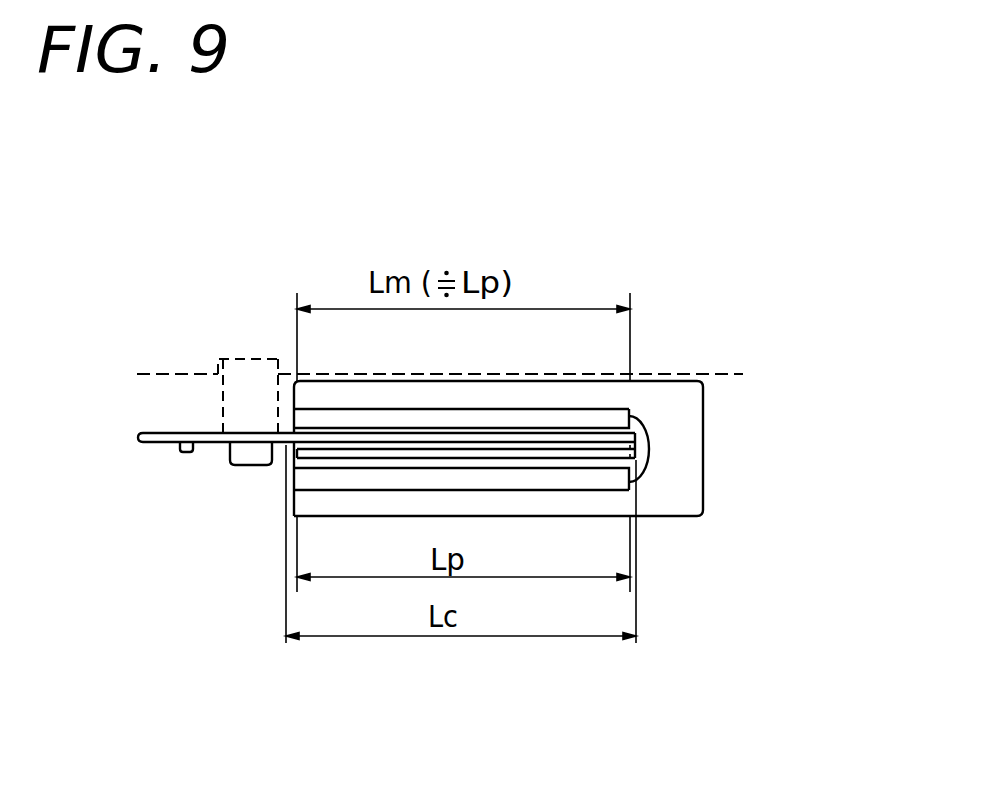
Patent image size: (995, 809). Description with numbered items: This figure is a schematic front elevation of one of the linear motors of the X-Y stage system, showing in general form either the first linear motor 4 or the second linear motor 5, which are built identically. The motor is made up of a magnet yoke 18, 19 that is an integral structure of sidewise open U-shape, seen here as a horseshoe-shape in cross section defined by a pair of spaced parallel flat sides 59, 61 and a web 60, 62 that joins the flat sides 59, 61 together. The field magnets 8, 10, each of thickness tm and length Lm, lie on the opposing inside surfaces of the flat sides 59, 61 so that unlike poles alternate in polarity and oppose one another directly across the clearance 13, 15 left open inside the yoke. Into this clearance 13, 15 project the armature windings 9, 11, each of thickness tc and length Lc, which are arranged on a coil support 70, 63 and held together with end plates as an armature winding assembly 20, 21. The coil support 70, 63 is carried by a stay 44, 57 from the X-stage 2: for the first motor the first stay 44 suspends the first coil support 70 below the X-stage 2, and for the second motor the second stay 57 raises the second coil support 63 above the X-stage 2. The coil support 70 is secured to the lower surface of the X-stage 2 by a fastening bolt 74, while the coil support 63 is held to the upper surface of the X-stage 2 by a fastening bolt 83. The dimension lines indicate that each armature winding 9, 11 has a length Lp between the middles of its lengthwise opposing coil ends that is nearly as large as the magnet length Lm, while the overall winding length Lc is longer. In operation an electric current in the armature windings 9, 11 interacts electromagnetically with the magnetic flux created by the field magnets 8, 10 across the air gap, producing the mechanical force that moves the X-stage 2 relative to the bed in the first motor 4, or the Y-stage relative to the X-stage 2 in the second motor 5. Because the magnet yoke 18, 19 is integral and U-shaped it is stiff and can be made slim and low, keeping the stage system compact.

The X-stage 2 is at (663, 370).
The first linear motor 4 is at (481, 451).
The second linear motor 5 is at (698, 377).
The first field magnets 8 is at (483, 487).
The second field magnets 10 is at (580, 418).
The first armature windings 9 is at (466, 587).
The second armature windings 11 is at (523, 457).
The clearance 13 is at (386, 564).
The clearance 15 is at (345, 462).
The first magnet yoke 18 is at (533, 577).
The second magnet yoke 19 is at (666, 520).
The first armature winding assembly 20 is at (389, 321).
The second armature winding assembly 21 is at (358, 435).
The first stay 44 is at (209, 345).
The second stay 57 is at (240, 377).
The flat sides 59 is at (485, 463).
The flat sides 61 is at (557, 392).
The web 60 is at (760, 448).
The web 62 is at (678, 463).
The second coil support 63 is at (389, 324).
The first coil support 70 is at (508, 434).
The fastening bolt 74 is at (207, 497).
The fastening bolt 83 is at (240, 457).